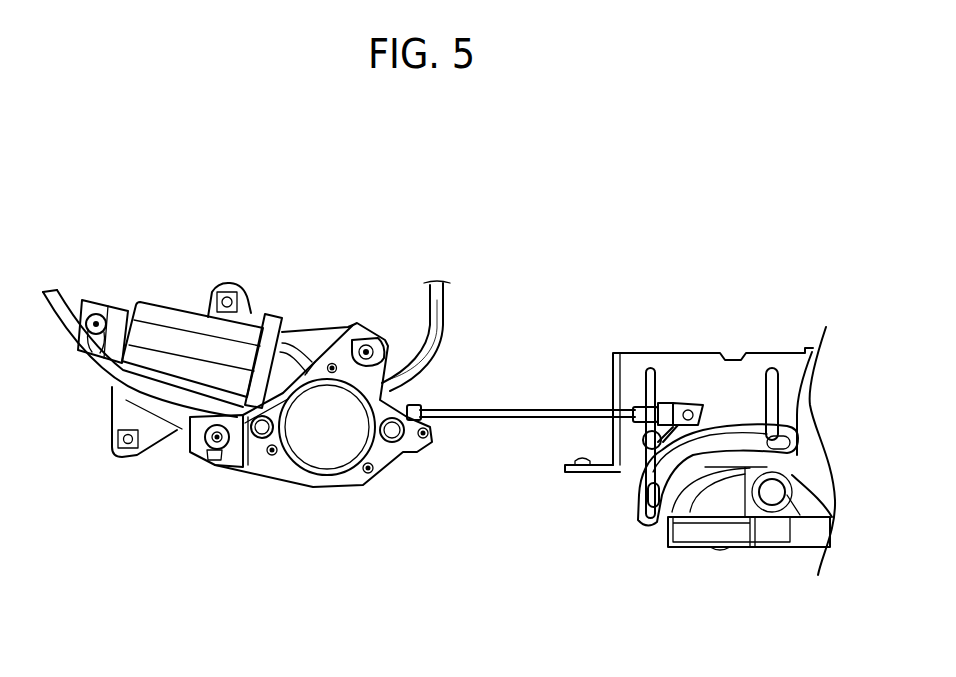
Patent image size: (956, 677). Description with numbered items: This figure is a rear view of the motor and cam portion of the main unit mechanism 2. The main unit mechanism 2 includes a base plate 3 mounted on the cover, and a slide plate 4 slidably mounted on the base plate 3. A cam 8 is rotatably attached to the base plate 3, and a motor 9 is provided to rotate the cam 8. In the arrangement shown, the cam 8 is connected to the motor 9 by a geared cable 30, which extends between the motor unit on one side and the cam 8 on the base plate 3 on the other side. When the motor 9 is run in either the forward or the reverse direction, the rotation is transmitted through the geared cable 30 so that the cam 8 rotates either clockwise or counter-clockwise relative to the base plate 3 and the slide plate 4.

The motor 9 is at (180, 332).
The geared cable 30 is at (495, 428).
The main unit mechanism 2 is at (693, 310).
The base plate 3 is at (800, 368).
The cam 8 is at (635, 532).
The slide plate 4 is at (766, 555).